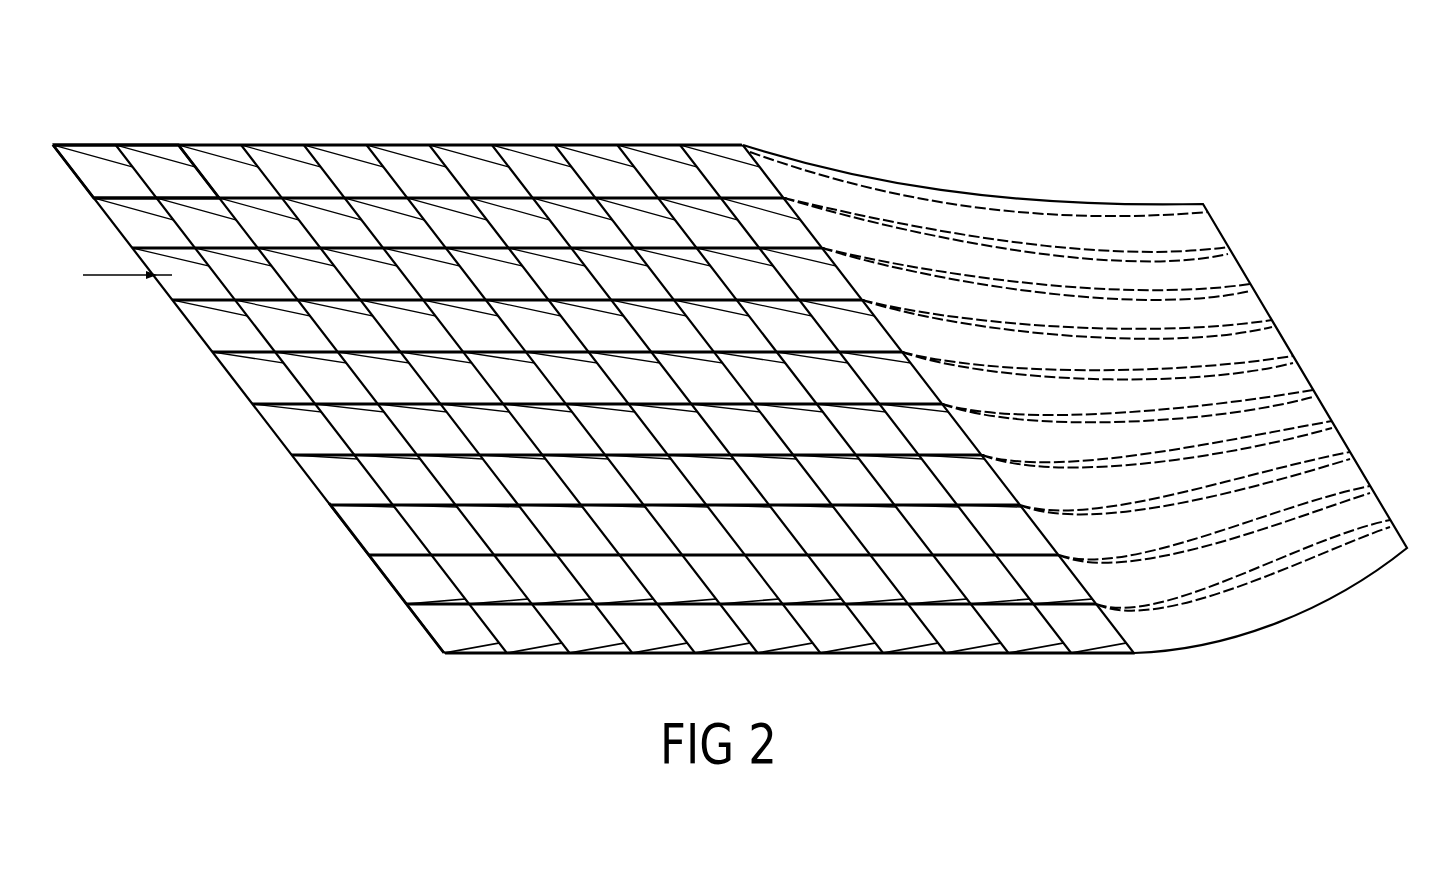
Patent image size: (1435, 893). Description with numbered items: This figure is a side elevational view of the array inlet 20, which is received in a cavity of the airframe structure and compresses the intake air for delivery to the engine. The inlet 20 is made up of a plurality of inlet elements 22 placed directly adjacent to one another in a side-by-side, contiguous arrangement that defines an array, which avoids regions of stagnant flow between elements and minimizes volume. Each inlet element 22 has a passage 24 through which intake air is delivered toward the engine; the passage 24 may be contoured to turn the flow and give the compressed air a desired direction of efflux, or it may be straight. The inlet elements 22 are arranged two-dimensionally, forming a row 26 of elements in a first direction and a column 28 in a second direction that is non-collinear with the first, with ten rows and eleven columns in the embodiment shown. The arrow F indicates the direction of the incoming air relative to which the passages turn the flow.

The array inlet 20 is at (776, 155).
The inlet element 22 is at (537, 165).
The passage 24 is at (617, 150).
The row 26 is at (418, 627).
The column 28 is at (227, 155).
The arrow indicating direction of incoming air F is at (128, 277).